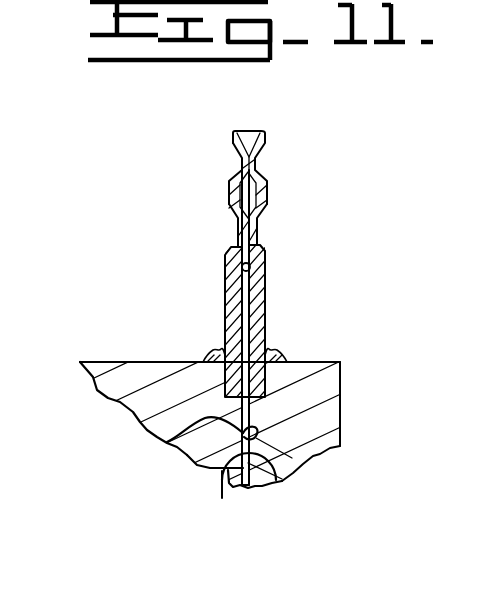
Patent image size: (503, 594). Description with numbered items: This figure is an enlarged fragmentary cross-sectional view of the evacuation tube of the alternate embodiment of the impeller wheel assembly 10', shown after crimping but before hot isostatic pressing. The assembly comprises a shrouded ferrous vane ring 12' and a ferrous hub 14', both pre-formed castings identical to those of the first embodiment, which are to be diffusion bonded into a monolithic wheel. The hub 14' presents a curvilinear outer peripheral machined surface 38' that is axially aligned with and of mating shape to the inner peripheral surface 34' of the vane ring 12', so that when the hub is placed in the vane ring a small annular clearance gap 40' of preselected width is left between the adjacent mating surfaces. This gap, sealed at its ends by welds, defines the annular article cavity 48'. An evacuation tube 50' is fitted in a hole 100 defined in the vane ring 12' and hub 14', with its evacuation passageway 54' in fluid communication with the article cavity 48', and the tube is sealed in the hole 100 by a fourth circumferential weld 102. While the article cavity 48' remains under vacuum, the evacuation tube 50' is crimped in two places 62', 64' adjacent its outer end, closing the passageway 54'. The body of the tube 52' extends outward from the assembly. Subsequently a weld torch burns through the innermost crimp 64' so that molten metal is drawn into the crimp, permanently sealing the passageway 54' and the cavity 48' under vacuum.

The impeller wheel assembly 10' is at (109, 410).
The vane ring 12' is at (235, 406).
The hub 14' is at (150, 331).
The first inner peripheral surface 34' is at (224, 488).
The second outer peripheral machined surface 38' is at (183, 478).
The annular clearance gap 40' is at (290, 492).
The article cavity 48' is at (202, 441).
The evacuation tube 50' is at (286, 329).
The pin 52' is at (200, 327).
The evacuation passageway 54' is at (291, 243).
The crimp 62' is at (292, 167).
The innermost crimp 64' is at (204, 223).
The hole 100 is at (285, 352).
The fourth circumferential weld 102 is at (214, 350).